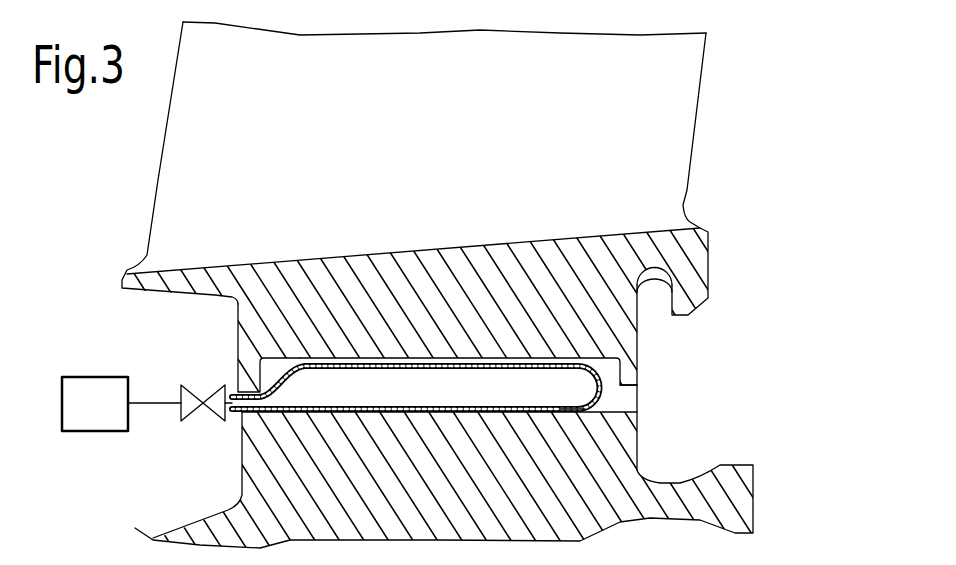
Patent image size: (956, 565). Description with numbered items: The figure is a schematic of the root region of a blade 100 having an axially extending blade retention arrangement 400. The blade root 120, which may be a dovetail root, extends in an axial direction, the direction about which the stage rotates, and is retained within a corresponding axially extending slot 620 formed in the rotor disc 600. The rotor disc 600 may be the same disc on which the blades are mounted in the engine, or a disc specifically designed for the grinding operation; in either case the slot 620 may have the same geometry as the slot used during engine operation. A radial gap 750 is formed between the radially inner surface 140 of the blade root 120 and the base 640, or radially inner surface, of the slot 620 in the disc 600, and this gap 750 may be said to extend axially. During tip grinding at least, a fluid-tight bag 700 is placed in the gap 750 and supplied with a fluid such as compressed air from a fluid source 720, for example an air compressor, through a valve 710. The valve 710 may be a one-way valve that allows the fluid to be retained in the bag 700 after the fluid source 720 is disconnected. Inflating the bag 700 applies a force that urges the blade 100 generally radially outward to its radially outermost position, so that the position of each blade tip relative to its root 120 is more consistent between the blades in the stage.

The blade 100 is at (705, 105).
The blade root 120 is at (258, 334).
The radially inner surface of the blade root 140 is at (598, 353).
The axially extending blade retention arrangement 400 is at (723, 348).
The rotor disc 600 is at (628, 480).
The axially extending slot 620 is at (637, 365).
The base of the slot 640 is at (605, 417).
The fluid-tight bag 700 is at (365, 406).
The valve 710 is at (193, 422).
The fluid source 720 is at (116, 413).
The radial gap 750 is at (623, 403).